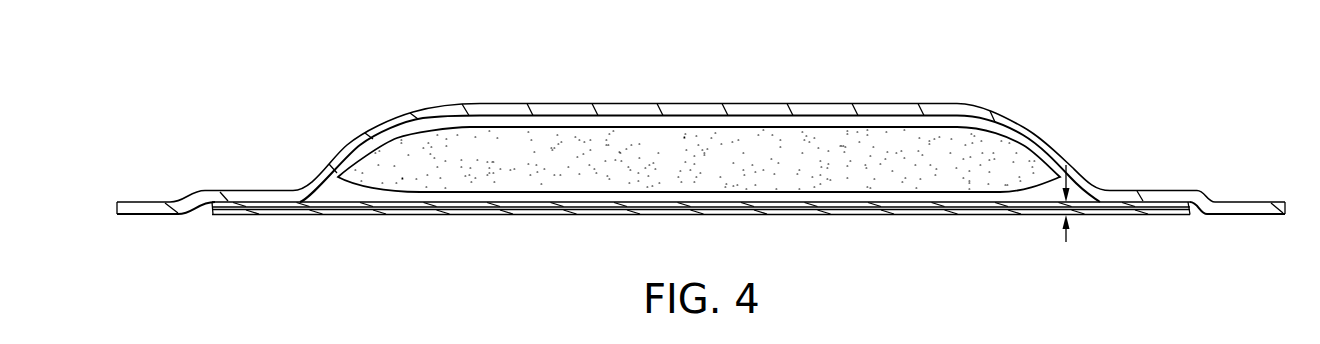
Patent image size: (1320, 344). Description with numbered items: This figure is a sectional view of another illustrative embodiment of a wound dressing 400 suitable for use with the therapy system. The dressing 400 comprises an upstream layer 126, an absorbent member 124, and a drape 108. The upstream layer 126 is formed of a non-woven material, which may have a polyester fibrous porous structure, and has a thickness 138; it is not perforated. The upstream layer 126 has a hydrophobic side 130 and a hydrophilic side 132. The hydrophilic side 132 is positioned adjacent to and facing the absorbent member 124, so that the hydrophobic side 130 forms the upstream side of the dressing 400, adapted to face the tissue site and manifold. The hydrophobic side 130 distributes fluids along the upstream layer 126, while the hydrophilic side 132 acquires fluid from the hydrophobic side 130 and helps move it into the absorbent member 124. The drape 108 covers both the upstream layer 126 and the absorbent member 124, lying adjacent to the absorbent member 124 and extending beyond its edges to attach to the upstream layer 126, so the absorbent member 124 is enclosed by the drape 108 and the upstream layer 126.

The dressing 400 is at (618, 90).
The drape 108 is at (818, 103).
The absorbent member 124 is at (723, 172).
The upstream layer 126 is at (400, 221).
The hydrophobic side 130 is at (595, 210).
The hydrophilic side 132 is at (782, 205).
The thickness 138 is at (1066, 240).